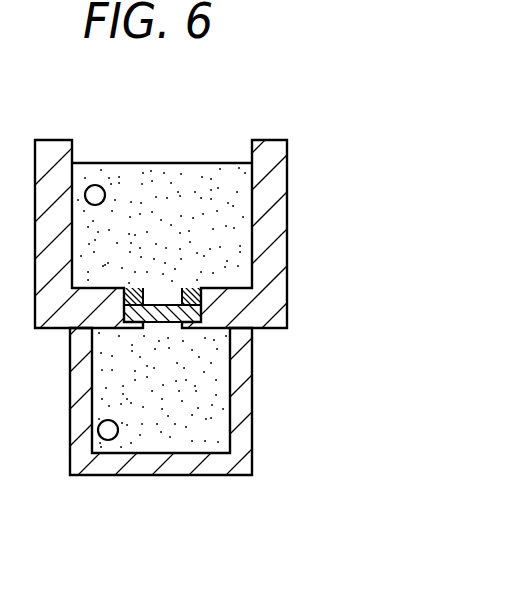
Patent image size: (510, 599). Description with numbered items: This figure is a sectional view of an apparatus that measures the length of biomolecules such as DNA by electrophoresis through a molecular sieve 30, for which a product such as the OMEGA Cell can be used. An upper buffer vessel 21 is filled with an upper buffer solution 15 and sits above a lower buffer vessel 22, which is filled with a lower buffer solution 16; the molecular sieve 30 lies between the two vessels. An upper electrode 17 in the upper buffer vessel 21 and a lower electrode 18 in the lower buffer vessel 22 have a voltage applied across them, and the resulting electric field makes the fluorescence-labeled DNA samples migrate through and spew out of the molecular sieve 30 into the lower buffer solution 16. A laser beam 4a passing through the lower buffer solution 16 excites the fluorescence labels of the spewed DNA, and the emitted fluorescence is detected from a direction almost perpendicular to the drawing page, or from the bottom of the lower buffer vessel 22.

The upper buffer vessel 21 is at (277, 229).
The lower buffer vessel 22 is at (243, 427).
The upper buffer solution 15 is at (220, 187).
The lower buffer solution 16 is at (188, 440).
The upper electrode 17 is at (98, 187).
The lower electrode 18 is at (105, 432).
The molecular sieve 30 is at (168, 310).
The laser beam 4a is at (182, 343).